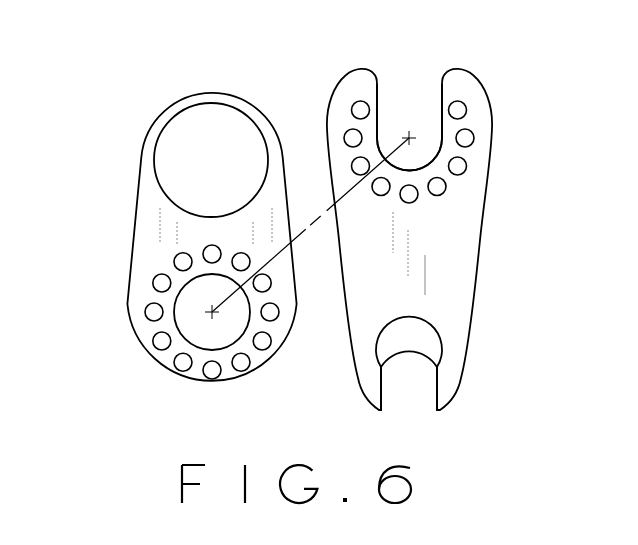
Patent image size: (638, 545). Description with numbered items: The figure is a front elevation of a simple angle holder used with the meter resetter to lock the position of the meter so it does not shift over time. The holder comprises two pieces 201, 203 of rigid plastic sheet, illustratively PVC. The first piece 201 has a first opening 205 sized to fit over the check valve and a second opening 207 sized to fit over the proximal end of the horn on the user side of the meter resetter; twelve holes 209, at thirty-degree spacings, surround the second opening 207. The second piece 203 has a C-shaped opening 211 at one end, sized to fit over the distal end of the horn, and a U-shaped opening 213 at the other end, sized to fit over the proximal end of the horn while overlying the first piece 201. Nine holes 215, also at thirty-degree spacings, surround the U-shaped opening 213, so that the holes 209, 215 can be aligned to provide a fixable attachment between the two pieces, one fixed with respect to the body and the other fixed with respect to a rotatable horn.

The first piece 201 is at (134, 203).
The second piece 203 is at (475, 186).
The first opening 205 is at (168, 119).
The second opening 207 is at (190, 332).
The holes 209 is at (154, 282).
The C-shaped opening 211 is at (438, 348).
The U-shaped opening 213 is at (378, 95).
The holes 215 is at (351, 106).